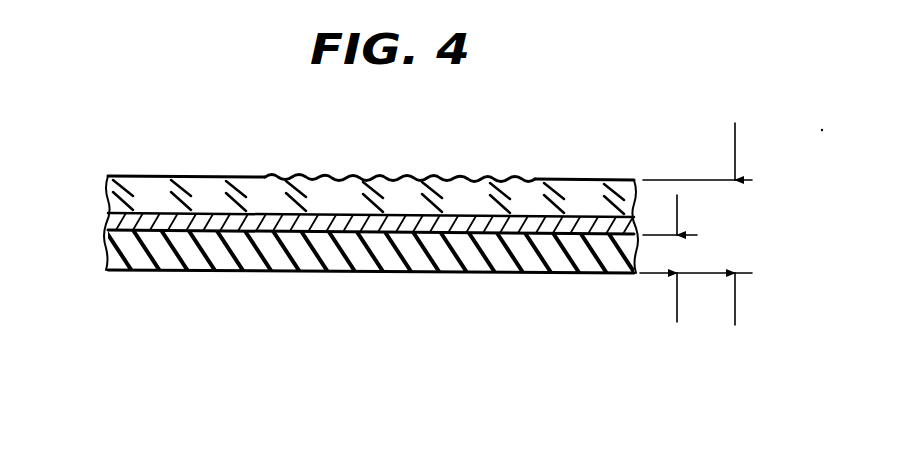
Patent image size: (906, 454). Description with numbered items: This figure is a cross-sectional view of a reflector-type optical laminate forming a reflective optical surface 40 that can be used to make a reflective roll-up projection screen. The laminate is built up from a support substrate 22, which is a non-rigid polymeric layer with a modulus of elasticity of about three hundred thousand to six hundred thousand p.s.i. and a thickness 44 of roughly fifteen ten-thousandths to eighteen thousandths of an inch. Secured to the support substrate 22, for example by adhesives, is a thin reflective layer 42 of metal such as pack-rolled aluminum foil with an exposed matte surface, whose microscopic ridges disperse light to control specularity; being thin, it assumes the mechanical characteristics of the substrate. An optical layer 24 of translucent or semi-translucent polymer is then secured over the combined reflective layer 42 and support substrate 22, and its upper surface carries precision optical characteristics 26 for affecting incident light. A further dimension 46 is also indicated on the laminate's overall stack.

The reflective optical surface 40 is at (68, 69).
The support substrate 22 is at (398, 262).
The reflective layer 42 is at (207, 222).
The optical layer 24 is at (528, 203).
The precision optical characteristics 26 is at (353, 176).
The thickness 44 is at (677, 322).
The total thickness 46 is at (735, 325).